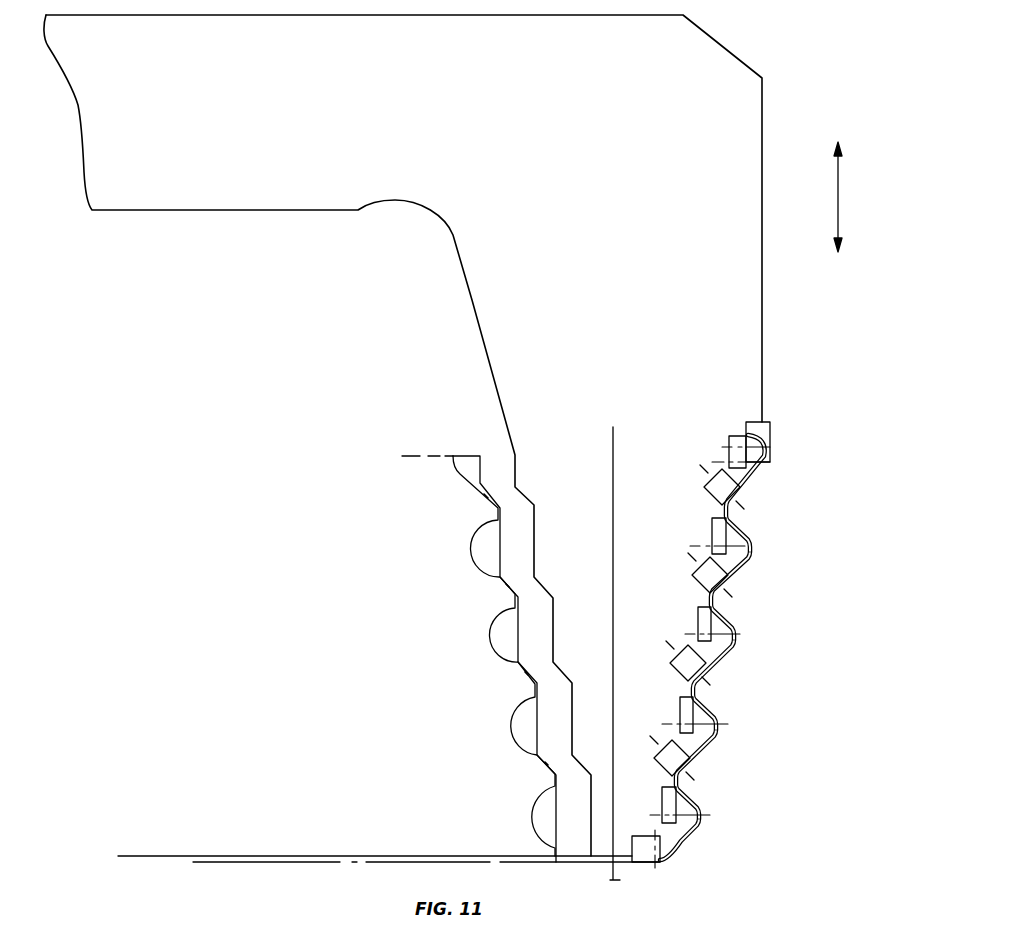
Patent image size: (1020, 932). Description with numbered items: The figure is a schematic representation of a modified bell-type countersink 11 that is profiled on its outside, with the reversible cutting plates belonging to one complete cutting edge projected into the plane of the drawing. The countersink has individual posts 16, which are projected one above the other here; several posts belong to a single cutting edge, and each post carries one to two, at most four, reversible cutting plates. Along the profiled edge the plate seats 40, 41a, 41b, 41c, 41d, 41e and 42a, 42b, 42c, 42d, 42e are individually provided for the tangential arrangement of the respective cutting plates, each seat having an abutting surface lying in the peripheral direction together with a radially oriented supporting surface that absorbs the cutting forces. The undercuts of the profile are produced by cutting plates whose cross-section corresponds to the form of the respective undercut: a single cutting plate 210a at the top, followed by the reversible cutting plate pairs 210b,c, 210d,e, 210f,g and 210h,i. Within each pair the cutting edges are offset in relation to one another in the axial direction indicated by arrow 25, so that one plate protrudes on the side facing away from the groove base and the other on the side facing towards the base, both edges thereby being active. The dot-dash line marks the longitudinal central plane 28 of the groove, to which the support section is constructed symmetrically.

The bell-type countersink 11 is at (392, 286).
The post 16 is at (581, 503).
The axial direction arrow 25 is at (838, 192).
The longitudinal central plane 28 is at (616, 880).
The plate seat 40 is at (754, 418).
The plate seat 41a is at (720, 452).
The plate seat 41b is at (708, 530).
The plate seat 41c is at (690, 620).
The plate seat 41d is at (671, 704).
The plate seat 41e is at (654, 794).
The plate seat 42a is at (704, 487).
The plate seat 42b is at (691, 572).
The plate seat 42c is at (675, 657).
The plate seat 42d is at (662, 749).
The plate seat 42e is at (636, 832).
The cutting plate 210a is at (752, 474).
The reversible cutting plate pair 210b,c is at (737, 560).
The reversible cutting plate pair 210d,e is at (718, 655).
The reversible cutting plate pair 210f,g is at (703, 742).
The reversible cutting plate pair 210h,i is at (688, 826).